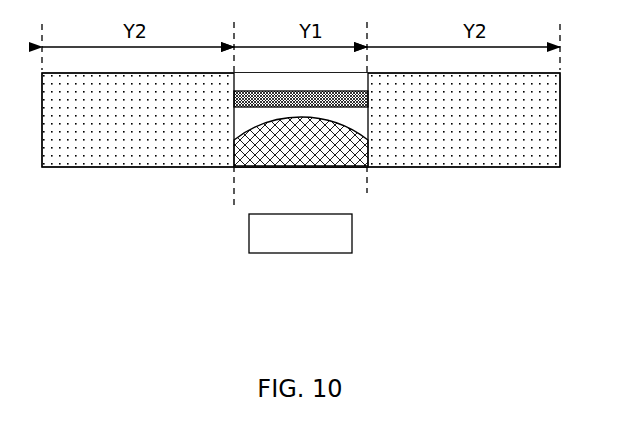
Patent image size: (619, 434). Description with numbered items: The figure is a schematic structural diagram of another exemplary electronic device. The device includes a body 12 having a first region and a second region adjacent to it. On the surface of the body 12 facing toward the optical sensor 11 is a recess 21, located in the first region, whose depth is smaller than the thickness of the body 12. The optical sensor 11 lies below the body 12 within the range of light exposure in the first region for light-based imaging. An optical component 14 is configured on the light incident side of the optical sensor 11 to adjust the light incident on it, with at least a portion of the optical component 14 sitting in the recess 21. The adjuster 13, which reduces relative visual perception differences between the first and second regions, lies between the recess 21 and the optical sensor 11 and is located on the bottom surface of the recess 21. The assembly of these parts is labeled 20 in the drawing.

The optical sensor 11 is at (352, 254).
The body 12 is at (492, 138).
The adjuster 13 is at (277, 108).
The optical component 14 is at (321, 143).
The optical member 20 is at (301, 153).
The recess 21 is at (353, 116).